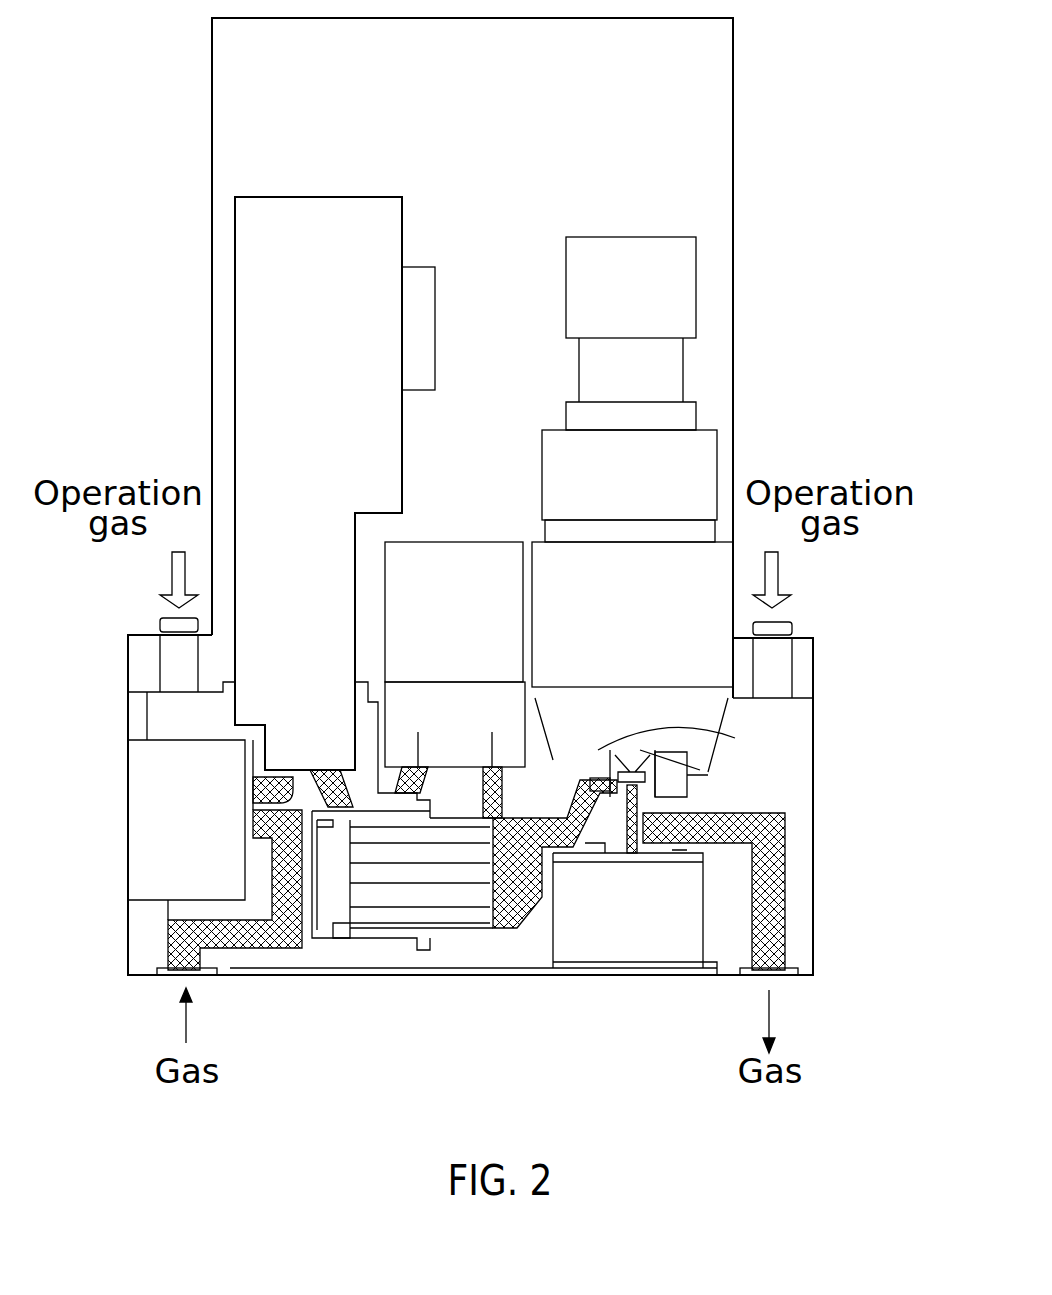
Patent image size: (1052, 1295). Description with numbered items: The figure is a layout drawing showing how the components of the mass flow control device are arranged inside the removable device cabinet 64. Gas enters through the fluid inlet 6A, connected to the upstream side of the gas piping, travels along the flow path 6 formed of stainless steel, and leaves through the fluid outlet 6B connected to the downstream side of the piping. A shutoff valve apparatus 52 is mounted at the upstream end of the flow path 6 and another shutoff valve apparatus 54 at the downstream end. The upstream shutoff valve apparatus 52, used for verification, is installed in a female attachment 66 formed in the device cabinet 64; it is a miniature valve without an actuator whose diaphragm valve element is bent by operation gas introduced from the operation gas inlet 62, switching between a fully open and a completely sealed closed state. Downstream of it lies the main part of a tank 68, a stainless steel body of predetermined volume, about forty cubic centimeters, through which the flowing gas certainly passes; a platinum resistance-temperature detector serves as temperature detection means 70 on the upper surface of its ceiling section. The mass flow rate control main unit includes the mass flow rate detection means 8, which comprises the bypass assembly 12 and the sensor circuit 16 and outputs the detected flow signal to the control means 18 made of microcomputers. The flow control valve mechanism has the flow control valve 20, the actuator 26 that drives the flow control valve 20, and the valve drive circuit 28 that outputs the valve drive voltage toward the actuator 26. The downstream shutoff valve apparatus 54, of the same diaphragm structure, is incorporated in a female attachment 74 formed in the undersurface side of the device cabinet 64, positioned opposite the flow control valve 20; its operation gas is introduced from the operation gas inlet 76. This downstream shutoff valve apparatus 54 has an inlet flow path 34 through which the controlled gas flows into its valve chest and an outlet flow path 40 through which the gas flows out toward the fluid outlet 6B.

The flow path 6 is at (278, 952).
The fluid inlet 6A is at (165, 975).
The fluid outlet 6B is at (790, 980).
The mass flow rate detection means 8 is at (505, 792).
The bypass assembly 12 is at (460, 910).
The sensor circuit 16 is at (455, 737).
The control means 18 is at (460, 565).
The flow control valve 20 is at (640, 748).
The actuator 26 is at (652, 633).
The valve drive circuit 28 is at (673, 285).
The inlet flow path 34 is at (640, 800).
The outlet flow path 40 is at (785, 913).
The shutoff valve apparatus 52 is at (150, 823).
The shutoff valve apparatus 54 is at (622, 945).
The operation gas inlet 62 is at (160, 623).
The device cabinet 64 is at (815, 846).
The female attachment 66 is at (156, 917).
The main part of a tank 68 is at (277, 196).
The temperature detection means 70 is at (416, 267).
The female attachment 74 is at (542, 922).
The operation gas inlet 76 is at (792, 624).